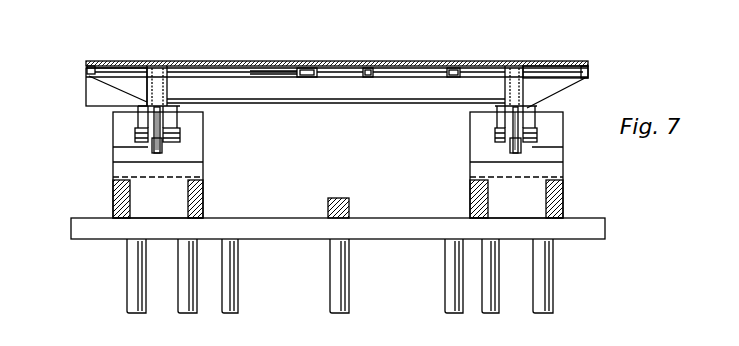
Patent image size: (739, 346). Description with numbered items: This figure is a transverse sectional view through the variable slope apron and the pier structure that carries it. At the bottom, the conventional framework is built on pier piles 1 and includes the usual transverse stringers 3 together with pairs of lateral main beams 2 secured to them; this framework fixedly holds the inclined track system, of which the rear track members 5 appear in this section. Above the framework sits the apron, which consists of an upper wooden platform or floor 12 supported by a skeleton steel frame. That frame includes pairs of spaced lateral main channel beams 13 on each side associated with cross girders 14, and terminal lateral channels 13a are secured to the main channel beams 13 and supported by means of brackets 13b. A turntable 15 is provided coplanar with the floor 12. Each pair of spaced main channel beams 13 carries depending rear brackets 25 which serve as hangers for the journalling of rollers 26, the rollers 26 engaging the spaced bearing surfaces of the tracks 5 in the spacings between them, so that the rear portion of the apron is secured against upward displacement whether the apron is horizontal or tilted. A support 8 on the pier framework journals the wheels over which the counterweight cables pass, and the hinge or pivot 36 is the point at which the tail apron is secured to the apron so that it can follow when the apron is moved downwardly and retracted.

The pier piles 1 is at (553, 285).
The lateral main beams 2 is at (113, 206).
The transverse stringers 3 is at (605, 228).
The rear track members 5 is at (163, 152).
The support 8 is at (203, 135).
The upper wooden platform or floor 12 is at (340, 62).
The lateral main channel beams 13 is at (147, 88).
The terminal lateral channels 13a is at (87, 85).
The brackets 13b is at (110, 82).
The cross girders 14 is at (297, 95).
The turntable 15 is at (167, 91).
The rear brackets 25 is at (180, 123).
The rollers 26 is at (152, 148).
The hinge or pivot 36 is at (193, 67).